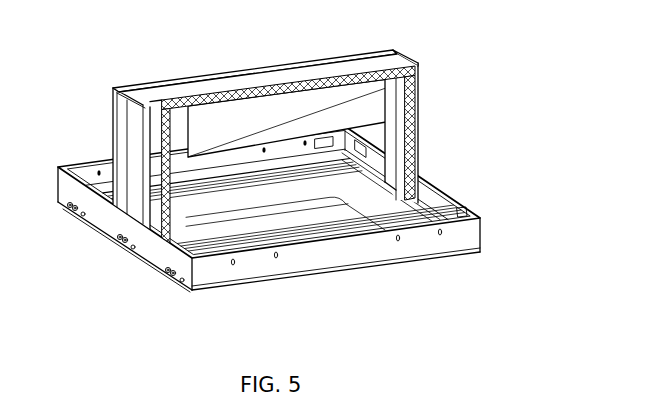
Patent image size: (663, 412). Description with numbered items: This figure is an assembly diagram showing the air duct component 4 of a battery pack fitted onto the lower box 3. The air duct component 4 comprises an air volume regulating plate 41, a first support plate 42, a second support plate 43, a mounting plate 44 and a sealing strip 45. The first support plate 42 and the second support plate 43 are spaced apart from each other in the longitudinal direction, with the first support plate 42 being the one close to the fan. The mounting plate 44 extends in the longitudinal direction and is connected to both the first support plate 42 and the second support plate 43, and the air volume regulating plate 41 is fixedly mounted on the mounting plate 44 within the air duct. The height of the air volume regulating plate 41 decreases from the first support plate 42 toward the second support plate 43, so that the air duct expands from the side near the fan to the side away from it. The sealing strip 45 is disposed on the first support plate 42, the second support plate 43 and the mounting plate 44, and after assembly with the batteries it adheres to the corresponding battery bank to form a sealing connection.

The lower box 3 is at (334, 258).
The air duct component 4 is at (269, 161).
The air volume regulating plate 41 is at (213, 127).
The first support plate 42 is at (133, 163).
The second support plate 43 is at (398, 177).
The mounting plate 44 is at (360, 67).
The sealing strip 45 is at (308, 82).